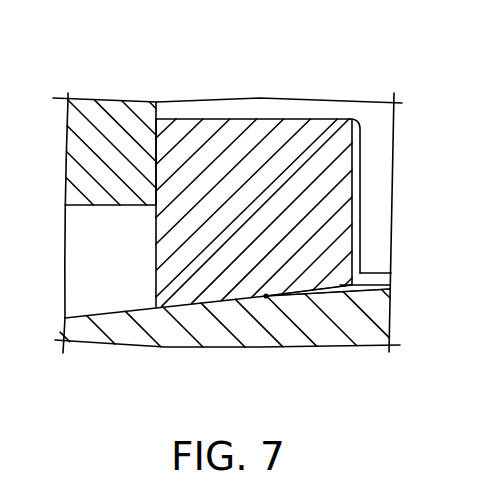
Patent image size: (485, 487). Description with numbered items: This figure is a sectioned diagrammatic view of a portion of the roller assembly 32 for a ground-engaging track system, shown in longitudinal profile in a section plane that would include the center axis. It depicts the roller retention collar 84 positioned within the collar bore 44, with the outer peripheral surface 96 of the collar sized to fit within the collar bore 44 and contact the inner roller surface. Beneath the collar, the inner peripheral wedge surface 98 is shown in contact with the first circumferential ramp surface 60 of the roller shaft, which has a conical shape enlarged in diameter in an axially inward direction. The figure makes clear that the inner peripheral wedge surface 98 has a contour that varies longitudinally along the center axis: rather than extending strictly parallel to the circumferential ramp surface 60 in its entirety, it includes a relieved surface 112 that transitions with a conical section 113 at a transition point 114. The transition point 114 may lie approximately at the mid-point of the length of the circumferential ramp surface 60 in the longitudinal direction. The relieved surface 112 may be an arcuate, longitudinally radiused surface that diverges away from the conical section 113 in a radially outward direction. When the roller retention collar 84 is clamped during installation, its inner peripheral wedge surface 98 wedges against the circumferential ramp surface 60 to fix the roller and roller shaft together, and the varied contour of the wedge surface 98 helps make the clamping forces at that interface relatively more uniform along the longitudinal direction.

The roller assembly 32 is at (117, 73).
The collar bore 44 is at (280, 124).
The first circumferential ramp surface 60 is at (344, 284).
The roller retention collar 84 is at (231, 132).
The outer peripheral surface 96 is at (195, 119).
The inner peripheral wedge surface 98 is at (167, 311).
The relieved surface 112 is at (342, 287).
The conical section 113 is at (230, 304).
The transition point 114 is at (263, 306).